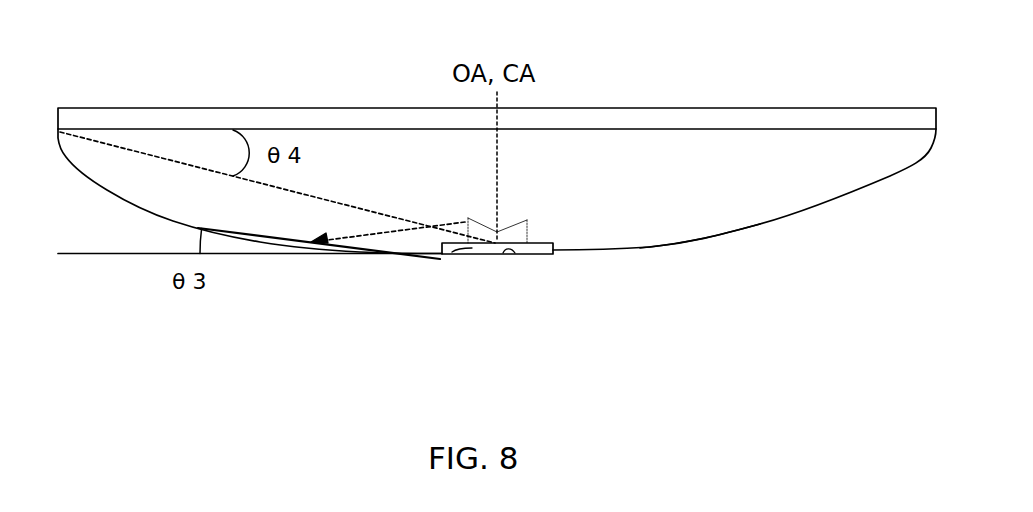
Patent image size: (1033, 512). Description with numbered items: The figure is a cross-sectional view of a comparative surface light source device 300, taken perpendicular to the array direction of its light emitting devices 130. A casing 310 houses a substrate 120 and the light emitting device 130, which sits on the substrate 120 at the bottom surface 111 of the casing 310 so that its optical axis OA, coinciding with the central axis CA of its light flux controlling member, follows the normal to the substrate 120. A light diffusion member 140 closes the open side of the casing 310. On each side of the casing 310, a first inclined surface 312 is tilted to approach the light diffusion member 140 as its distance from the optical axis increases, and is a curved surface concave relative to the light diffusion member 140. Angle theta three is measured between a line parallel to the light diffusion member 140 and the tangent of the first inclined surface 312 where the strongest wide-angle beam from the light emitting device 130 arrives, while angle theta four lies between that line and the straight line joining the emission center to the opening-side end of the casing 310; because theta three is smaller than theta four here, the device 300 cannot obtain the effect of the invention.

The comparative surface light source device 300 is at (882, 68).
The light diffusion member 140 is at (180, 122).
The casing 310 is at (667, 248).
The first inclined surface 312 is at (189, 229).
The substrate 120 is at (447, 254).
The bottom surface 111 is at (505, 254).
The light emitting device 130 is at (513, 232).